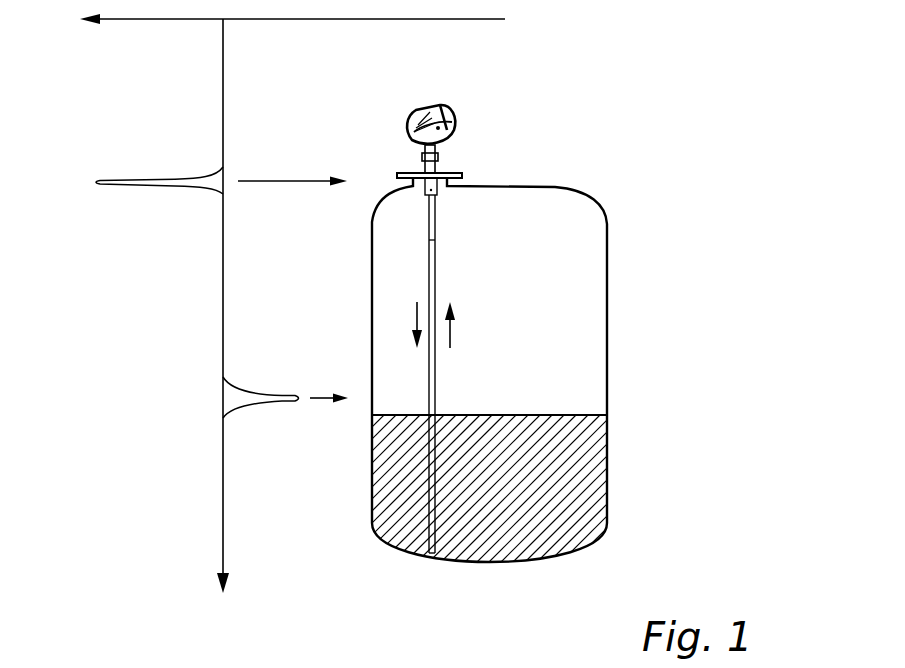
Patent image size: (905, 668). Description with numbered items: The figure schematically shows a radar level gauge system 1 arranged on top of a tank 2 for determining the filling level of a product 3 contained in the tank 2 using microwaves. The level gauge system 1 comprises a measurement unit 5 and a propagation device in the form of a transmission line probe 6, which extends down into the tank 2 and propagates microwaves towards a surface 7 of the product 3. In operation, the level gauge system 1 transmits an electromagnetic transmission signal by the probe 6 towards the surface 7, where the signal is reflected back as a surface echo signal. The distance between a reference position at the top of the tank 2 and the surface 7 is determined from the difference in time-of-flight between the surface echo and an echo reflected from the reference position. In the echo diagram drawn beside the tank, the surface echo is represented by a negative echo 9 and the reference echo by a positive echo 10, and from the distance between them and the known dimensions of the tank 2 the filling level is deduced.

The level gauge system 1 is at (518, 98).
The tank 2 is at (607, 263).
The product 3 is at (572, 470).
The measurement unit 5 is at (411, 97).
The transmission line probe 6 is at (432, 276).
The surface 7 is at (562, 415).
The negative echo 9 is at (287, 402).
The positive echo 10 is at (110, 187).